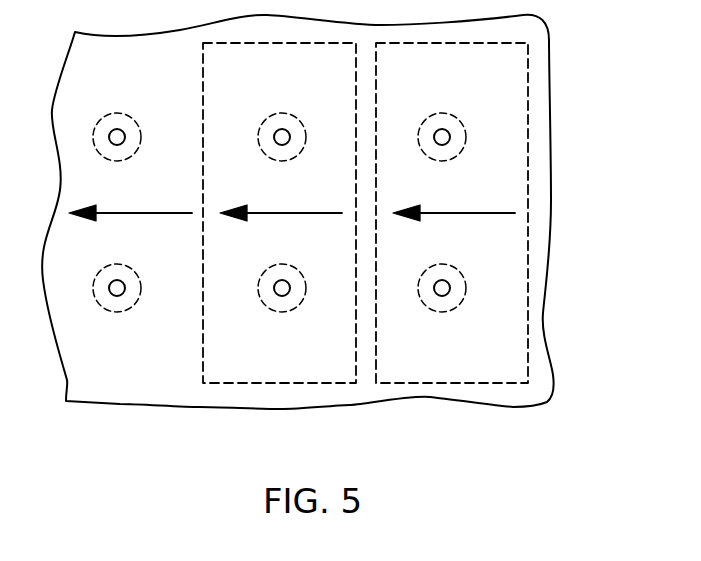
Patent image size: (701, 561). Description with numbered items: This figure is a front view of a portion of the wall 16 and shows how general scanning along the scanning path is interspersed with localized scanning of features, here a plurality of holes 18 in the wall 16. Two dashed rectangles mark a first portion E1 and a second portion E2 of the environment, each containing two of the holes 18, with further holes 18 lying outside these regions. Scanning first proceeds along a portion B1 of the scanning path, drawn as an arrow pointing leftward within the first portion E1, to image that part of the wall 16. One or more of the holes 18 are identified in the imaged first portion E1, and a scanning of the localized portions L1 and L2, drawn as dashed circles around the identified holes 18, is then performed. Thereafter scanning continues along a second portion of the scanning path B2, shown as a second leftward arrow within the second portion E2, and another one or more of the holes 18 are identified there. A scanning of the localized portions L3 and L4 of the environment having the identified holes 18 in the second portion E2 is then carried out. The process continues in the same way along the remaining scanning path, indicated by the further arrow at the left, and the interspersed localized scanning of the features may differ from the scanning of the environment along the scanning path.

The wall 16 is at (122, 83).
The holes 18 is at (450, 136).
The localized portion L1 is at (442, 113).
The localized portion L2 is at (440, 312).
The localized portion L3 is at (282, 113).
The localized portion L4 is at (280, 312).
The portion of the scanning path B1 is at (487, 214).
The second portion of the scanning path B2 is at (327, 214).
The first portion of the environment E1 is at (415, 383).
The second portion of the environment E2 is at (257, 383).